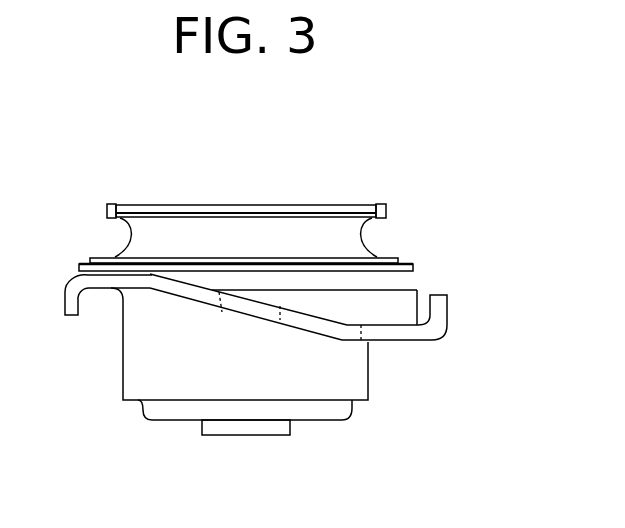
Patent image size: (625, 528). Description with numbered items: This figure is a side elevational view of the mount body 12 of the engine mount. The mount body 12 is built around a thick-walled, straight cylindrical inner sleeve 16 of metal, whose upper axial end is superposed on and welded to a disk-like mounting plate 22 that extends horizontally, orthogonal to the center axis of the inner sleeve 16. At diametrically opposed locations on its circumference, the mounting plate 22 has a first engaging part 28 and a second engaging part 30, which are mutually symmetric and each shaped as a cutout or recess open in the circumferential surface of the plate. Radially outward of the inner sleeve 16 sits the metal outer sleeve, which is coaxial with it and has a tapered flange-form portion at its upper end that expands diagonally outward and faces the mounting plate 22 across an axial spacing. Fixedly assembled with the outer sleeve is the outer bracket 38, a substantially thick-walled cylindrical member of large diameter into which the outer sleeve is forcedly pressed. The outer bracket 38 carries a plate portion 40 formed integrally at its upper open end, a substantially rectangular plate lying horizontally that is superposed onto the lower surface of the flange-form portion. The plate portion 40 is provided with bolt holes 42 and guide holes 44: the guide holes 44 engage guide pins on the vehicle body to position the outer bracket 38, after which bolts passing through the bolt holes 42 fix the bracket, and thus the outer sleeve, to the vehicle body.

The mount body 12 is at (478, 211).
The inner sleeve 16 is at (265, 436).
The mounting plate 22 is at (281, 207).
The first engaging part 28 is at (386, 210).
The second engaging part 30 is at (107, 211).
The outer bracket 38 is at (371, 378).
The plate portion 40 is at (317, 327).
The bolt holes 42 is at (218, 310).
The guide holes 44 is at (408, 341).